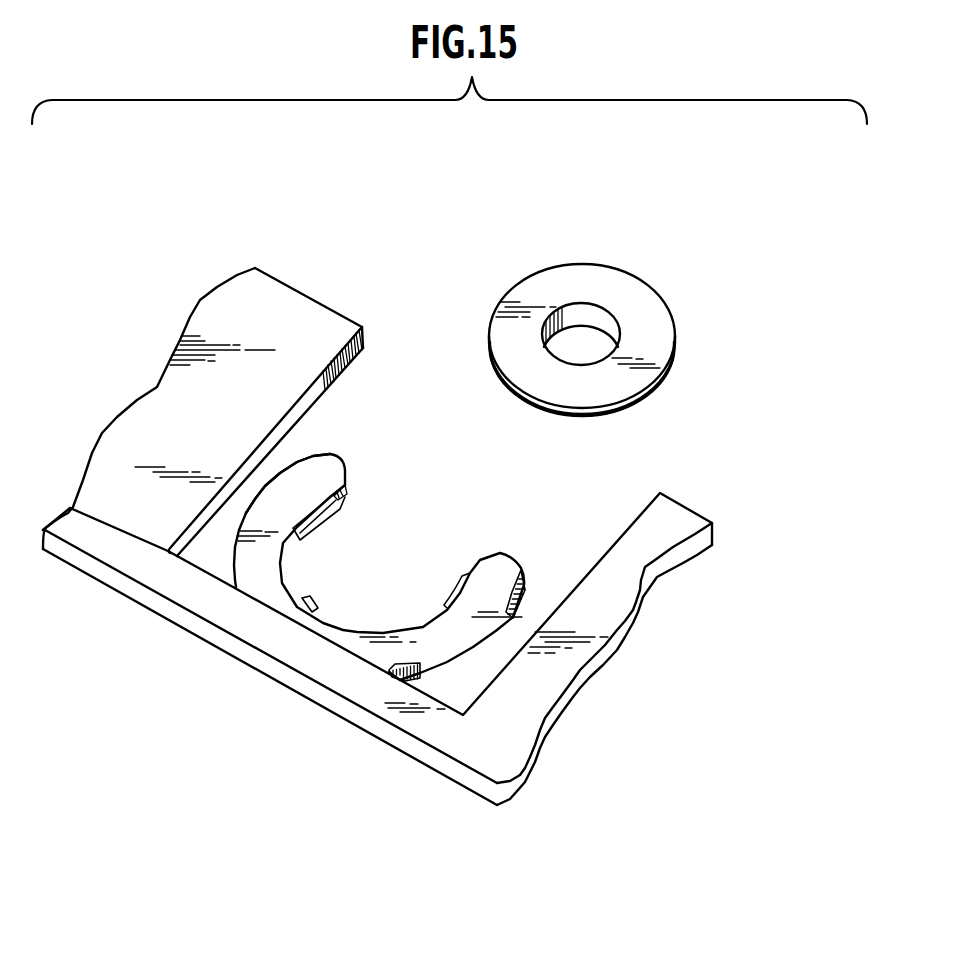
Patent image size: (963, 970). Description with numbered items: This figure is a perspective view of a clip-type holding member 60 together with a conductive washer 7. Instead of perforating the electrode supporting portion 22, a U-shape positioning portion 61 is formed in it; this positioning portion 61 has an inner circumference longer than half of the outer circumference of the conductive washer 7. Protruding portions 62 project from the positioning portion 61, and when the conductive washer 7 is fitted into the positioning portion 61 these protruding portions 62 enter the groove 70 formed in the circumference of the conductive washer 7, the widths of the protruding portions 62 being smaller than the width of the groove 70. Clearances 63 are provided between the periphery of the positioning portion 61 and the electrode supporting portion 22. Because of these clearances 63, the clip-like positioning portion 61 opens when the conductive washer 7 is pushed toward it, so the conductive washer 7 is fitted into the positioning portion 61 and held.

The electrode supporting portion 22 is at (235, 297).
The holding member 60 is at (490, 452).
The U-shape positioning portion 61 is at (327, 468).
The protruding portions 62 is at (313, 607).
The clearances 63 is at (537, 600).
The conductive washer 7 is at (652, 311).
The groove 70 is at (640, 402).